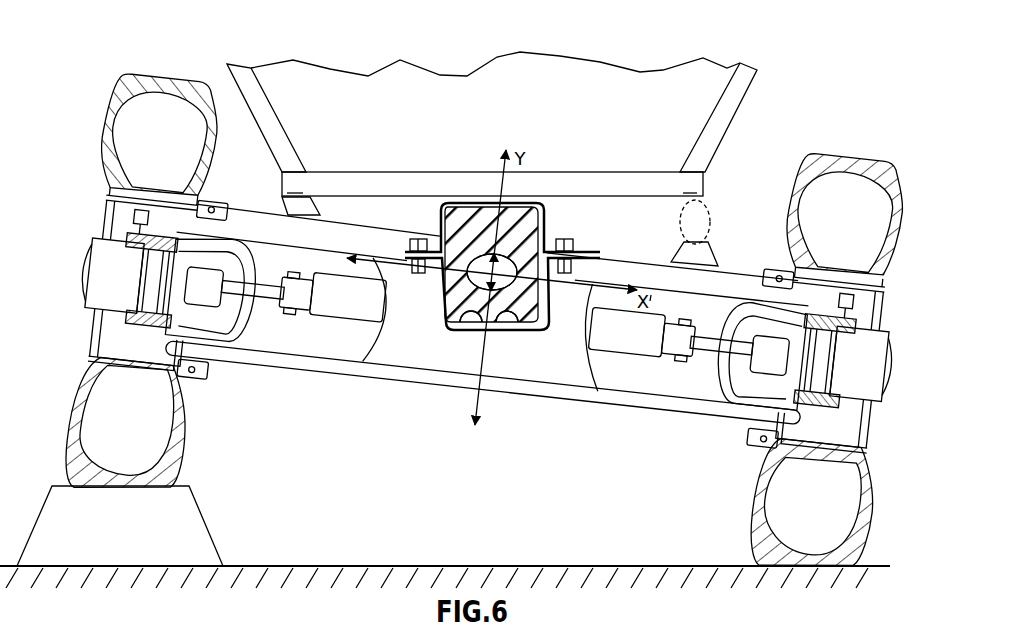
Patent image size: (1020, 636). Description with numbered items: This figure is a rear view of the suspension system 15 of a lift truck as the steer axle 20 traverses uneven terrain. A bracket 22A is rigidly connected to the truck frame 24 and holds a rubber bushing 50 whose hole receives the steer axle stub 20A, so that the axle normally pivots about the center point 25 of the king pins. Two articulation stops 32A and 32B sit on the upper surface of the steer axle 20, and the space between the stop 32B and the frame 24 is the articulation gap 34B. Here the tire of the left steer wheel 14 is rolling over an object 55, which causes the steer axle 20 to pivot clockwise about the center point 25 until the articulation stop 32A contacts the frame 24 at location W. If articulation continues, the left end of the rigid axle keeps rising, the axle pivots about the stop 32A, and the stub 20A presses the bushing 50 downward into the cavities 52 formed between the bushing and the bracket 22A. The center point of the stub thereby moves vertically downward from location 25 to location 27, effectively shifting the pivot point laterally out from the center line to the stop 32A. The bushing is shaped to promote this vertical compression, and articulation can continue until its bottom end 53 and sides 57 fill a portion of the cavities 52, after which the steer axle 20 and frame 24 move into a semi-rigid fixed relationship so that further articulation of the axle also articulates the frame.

The left steer wheel 14 is at (106, 96).
The suspension system 15 is at (792, 85).
The steer axle 20 is at (255, 216).
The steer axle stub 20A is at (443, 304).
The bracket 22A is at (548, 215).
The truck frame 24 is at (716, 128).
The center point 25 is at (452, 218).
The location 27 is at (482, 246).
The articulation stop 32A is at (300, 208).
The articulation stop 32B is at (679, 254).
The articulation gap 34B is at (714, 212).
The rubber bushing 50 is at (549, 326).
The cavities 52 is at (508, 327).
The bottom end 53 is at (471, 327).
The object 55 is at (205, 514).
The sides 57 is at (551, 294).